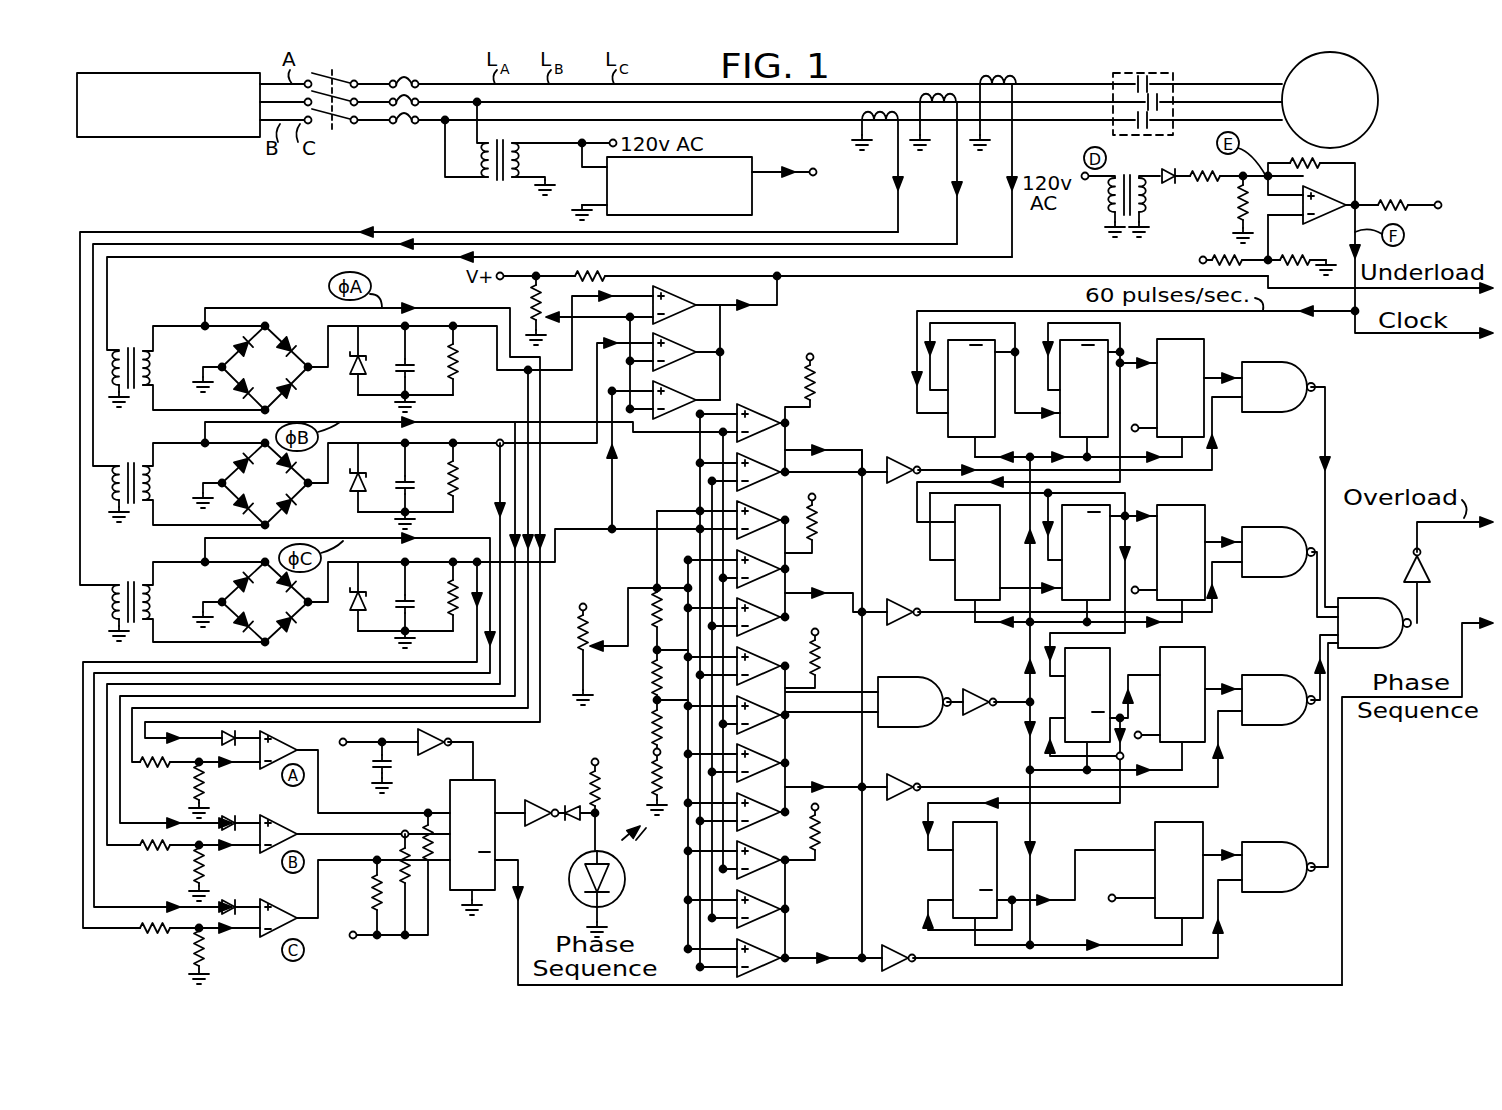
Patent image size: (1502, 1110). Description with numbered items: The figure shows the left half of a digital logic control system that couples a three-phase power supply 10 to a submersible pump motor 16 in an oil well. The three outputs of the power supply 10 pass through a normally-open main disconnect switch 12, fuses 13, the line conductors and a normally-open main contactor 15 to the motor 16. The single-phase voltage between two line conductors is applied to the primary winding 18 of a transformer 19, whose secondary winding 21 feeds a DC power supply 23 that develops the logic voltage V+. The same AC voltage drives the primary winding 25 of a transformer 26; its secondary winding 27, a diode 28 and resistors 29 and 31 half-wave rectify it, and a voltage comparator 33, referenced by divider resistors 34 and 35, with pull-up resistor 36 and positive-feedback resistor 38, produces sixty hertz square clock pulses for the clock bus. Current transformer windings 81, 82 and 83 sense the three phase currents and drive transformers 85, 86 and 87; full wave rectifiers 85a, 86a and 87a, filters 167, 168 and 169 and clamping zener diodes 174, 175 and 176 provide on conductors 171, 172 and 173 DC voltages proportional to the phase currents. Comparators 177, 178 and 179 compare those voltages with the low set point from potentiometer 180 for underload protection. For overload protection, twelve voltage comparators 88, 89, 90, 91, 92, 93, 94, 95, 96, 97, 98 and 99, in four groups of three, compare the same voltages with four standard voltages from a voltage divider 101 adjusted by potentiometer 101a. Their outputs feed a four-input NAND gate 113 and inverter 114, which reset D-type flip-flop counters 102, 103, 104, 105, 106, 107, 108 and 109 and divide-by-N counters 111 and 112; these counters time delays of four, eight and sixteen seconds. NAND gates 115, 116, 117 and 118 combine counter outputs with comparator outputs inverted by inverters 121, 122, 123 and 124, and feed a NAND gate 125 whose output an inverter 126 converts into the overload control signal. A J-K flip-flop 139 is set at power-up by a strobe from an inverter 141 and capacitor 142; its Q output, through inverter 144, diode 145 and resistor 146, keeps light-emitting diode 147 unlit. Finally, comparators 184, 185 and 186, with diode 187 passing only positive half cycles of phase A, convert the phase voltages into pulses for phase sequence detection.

The three-phase power supply 10 is at (190, 70).
The main disconnect switch 12 is at (331, 87).
The fuses 13 is at (404, 84).
The main contactor 15 is at (1113, 132).
The three-phase submersible pump motor 16 is at (1377, 82).
The primary winding 18 is at (486, 162).
The transformer 19 is at (504, 191).
The secondary winding 21 is at (515, 160).
The DC power supply 23 is at (752, 194).
The primary winding 25 is at (1110, 205).
The transformer 26 is at (1127, 183).
The secondary winding 27 is at (1142, 205).
The diode 28 is at (1170, 170).
The resistor 29 is at (1210, 178).
The resistor 31 is at (1238, 222).
The voltage comparator 33 is at (1312, 205).
The resistor 34 is at (1226, 254).
The resistor 35 is at (1296, 254).
The pull-up resistor 36 is at (1398, 205).
The feedback resistor 38 is at (1330, 158).
The current transformer winding 81 is at (1008, 80).
The current transformer winding 82 is at (938, 98).
The current transformer winding 83 is at (880, 116).
The transformer 85 is at (187, 365).
The full wave rectifier 85a is at (252, 368).
The transformer 86 is at (187, 480).
The full wave rectifier 86a is at (252, 484).
The transformer 87 is at (187, 598).
The full wave rectifier 87a is at (252, 602).
The voltage comparator 88 is at (754, 420).
The voltage comparator 89 is at (759, 470).
The voltage comparator 90 is at (759, 518).
The voltage comparator 91 is at (759, 567).
The voltage comparator 92 is at (759, 615).
The voltage comparator 93 is at (759, 664).
The voltage comparator 94 is at (759, 713).
The voltage comparator 95 is at (759, 761).
The voltage comparator 96 is at (759, 810).
The voltage comparator 97 is at (759, 858).
The voltage comparator 98 is at (759, 907).
The voltage comparator 99 is at (759, 956).
The voltage divider 101 is at (634, 683).
The potentiometer 101a is at (585, 662).
The D type flip-flop 102 is at (1204, 347).
The D type flip-flop 103 is at (956, 590).
The D type flip-flop 104 is at (1095, 511).
The D type flip-flop 105 is at (1204, 510).
The D type flip-flop 106 is at (1112, 648).
The D type flip-flop 107 is at (1204, 646).
The D type flip-flop 108 is at (944, 872).
The D type flip-flop 109 is at (1194, 816).
The presettable divide-by-N counter 111 is at (950, 438).
The presettable divide-by-N counter 112 is at (1058, 438).
The NAND gate 113 is at (920, 702).
The inverter 114 is at (977, 696).
The NAND gate 115 is at (1290, 484).
The NAND gate 116 is at (1290, 572).
The NAND gate 117 is at (1290, 680).
The NAND gate 118 is at (1290, 767).
The inverter 121 is at (891, 460).
The inverter 122 is at (891, 600).
The inverter 123 is at (891, 777).
The inverter 124 is at (886, 948).
The NAND gate 125 is at (1374, 623).
The inverter 126 is at (1430, 572).
The J-K flip-flop 139 is at (485, 780).
The inverter 141 is at (394, 754).
The capacitor 142 is at (376, 777).
The inverter 144 is at (545, 790).
The diode 145 is at (572, 823).
The resistor 146 is at (600, 788).
The light-emitting diode 147 is at (618, 895).
The filter 167 is at (421, 368).
The filter 168 is at (421, 485).
The filter 169 is at (421, 604).
The conductor 171 is at (470, 330).
The conductor 172 is at (468, 462).
The conductor 173 is at (472, 560).
The zener diode 174 is at (375, 361).
The zener diode 175 is at (375, 478).
The zener diode 176 is at (375, 597).
The voltage comparator 177 is at (674, 298).
The voltage comparator 178 is at (674, 346).
The voltage comparator 179 is at (674, 394).
The potentiometer 180 is at (530, 302).
The voltage comparator 184 is at (280, 770).
The voltage comparator 185 is at (280, 853).
The voltage comparator 186 is at (274, 936).
The diode 187 is at (224, 742).